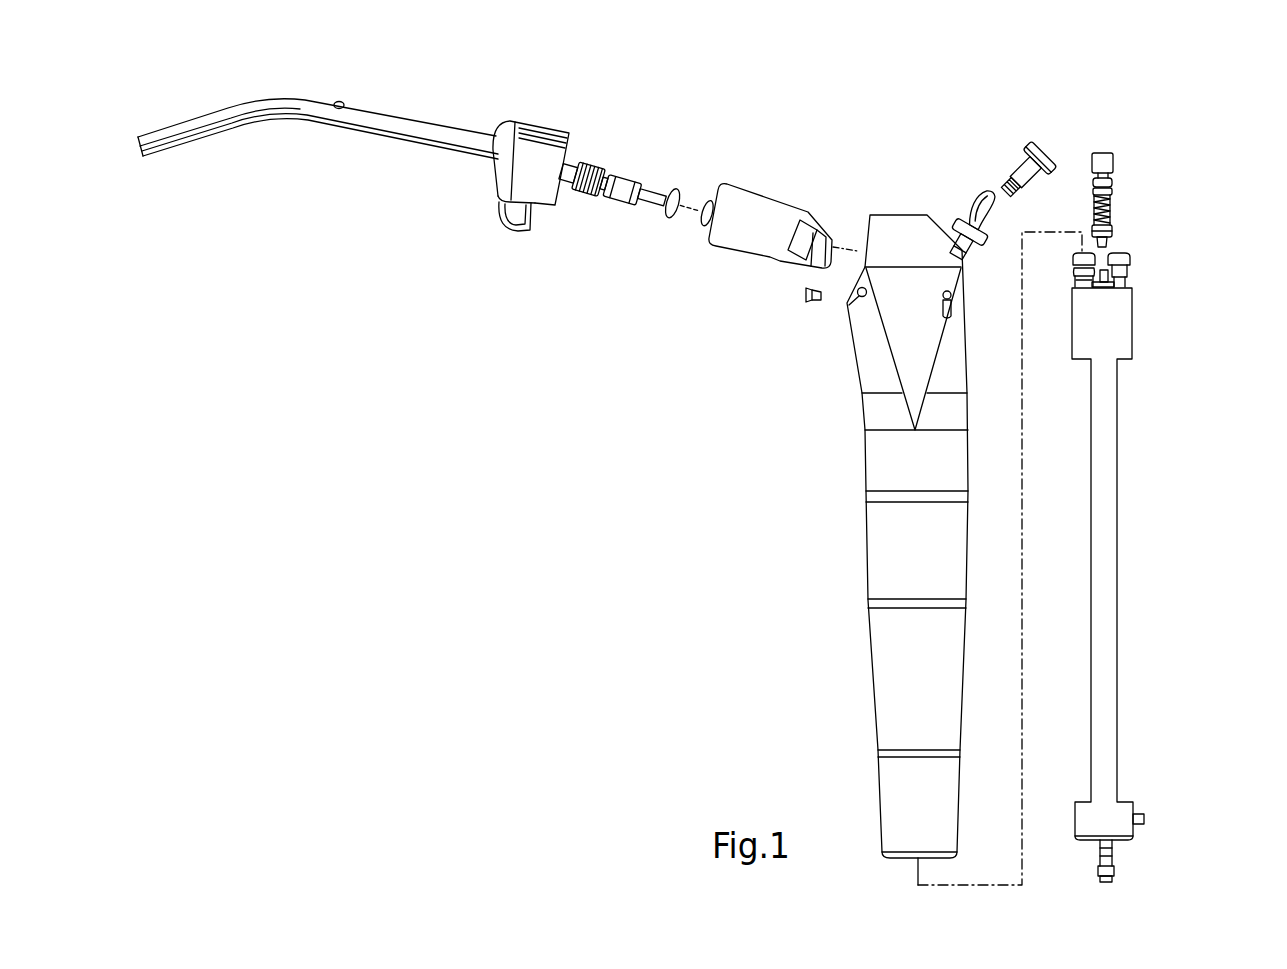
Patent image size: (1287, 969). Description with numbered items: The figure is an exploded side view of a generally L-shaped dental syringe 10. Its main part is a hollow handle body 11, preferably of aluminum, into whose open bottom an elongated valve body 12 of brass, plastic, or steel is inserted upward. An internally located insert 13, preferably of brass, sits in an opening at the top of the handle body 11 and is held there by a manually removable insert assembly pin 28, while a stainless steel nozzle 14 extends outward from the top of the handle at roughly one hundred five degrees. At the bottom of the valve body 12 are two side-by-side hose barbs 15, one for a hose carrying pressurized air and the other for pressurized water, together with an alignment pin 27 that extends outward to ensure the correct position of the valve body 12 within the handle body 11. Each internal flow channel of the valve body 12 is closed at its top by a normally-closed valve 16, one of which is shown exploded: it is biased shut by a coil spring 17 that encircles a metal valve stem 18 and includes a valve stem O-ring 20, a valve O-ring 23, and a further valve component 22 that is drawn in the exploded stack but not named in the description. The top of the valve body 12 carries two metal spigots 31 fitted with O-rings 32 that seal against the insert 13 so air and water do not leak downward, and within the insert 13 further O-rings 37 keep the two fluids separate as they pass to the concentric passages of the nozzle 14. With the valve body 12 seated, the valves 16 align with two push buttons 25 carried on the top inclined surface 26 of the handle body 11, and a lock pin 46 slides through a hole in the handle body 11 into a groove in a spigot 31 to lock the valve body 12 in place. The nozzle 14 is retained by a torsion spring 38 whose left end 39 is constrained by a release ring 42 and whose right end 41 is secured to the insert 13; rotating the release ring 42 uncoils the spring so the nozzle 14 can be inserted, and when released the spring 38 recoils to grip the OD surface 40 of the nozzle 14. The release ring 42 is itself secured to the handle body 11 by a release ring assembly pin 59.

The dental syringe 10 is at (1076, 106).
The handle body 11 is at (867, 537).
The valve body 12 is at (1118, 599).
The insert 13 is at (753, 186).
The nozzle 14 is at (340, 103).
The hose barbs 15 is at (1115, 862).
The valve 16 is at (1165, 199).
The coil spring 17 is at (1112, 204).
The valve stem 18 is at (1102, 154).
The valve stem O-ring 20 is at (1110, 180).
The collar 22 is at (1110, 224).
The valve O-ring 23 is at (1110, 237).
The push button 25 is at (1022, 142).
The top inclined surface 26 is at (983, 255).
The alignment pin 27 is at (1145, 820).
The insert assembly pin 28 is at (948, 320).
The spigot 31 is at (1073, 284).
The O-ring 32 is at (1073, 259).
The O-ring 37 is at (672, 218).
The torsion spring 38 is at (580, 194).
The left end of torsion spring 39 is at (560, 192).
The OD surface 40 is at (433, 124).
The right end of torsion spring 41 is at (594, 198).
The release ring 42 is at (532, 120).
The lock pin 46 is at (817, 303).
The release ring assembly pin 59 is at (857, 298).